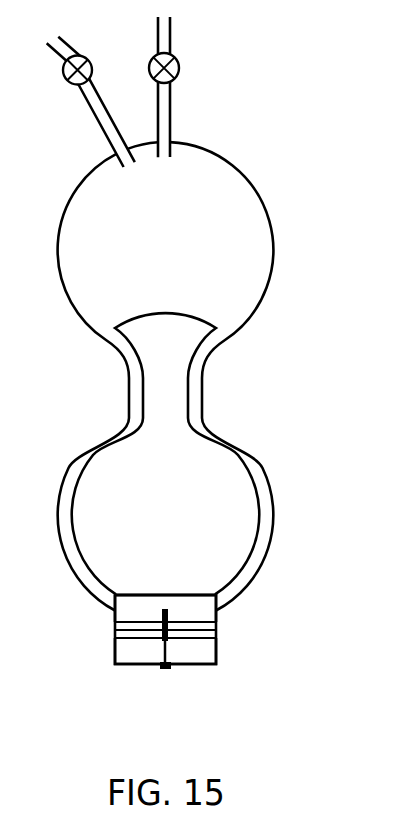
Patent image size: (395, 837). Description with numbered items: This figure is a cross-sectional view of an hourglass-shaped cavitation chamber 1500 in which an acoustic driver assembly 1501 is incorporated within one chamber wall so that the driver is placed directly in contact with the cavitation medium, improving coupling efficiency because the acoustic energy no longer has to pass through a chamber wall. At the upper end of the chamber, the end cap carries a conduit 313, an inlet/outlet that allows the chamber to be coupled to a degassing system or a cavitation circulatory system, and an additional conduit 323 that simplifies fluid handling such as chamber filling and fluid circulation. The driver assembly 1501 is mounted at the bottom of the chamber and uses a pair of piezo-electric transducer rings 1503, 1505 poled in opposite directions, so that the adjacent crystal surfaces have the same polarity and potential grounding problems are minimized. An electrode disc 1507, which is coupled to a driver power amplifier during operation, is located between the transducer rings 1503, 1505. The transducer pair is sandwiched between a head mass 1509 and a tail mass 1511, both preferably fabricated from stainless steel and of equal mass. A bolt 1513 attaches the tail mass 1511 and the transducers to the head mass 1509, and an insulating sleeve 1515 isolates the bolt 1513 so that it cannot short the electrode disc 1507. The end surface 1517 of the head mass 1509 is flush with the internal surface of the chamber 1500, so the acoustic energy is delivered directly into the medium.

The chamber 1500 is at (258, 402).
The conduit 313 is at (172, 103).
The additional conduit 323 is at (103, 112).
The driver assembly 1501 is at (189, 633).
The piezo-electric transducer ring 1503 is at (115, 623).
The piezo-electric transducer ring 1505 is at (115, 633).
The electrode disc 1507 is at (171, 635).
The head mass 1509 is at (203, 605).
The tail mass 1511 is at (203, 655).
The bolt 1513 is at (158, 660).
The insulating sleeve 1515 is at (160, 641).
The end surface 1517 is at (140, 594).